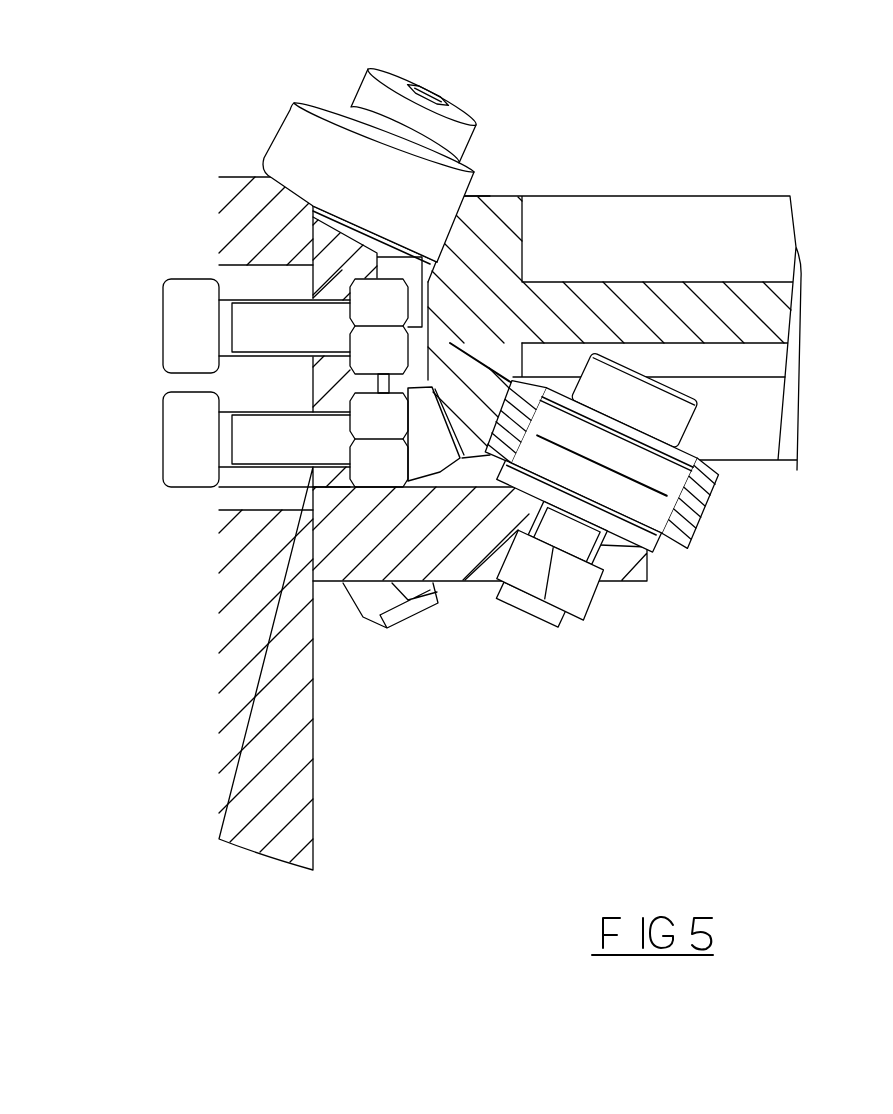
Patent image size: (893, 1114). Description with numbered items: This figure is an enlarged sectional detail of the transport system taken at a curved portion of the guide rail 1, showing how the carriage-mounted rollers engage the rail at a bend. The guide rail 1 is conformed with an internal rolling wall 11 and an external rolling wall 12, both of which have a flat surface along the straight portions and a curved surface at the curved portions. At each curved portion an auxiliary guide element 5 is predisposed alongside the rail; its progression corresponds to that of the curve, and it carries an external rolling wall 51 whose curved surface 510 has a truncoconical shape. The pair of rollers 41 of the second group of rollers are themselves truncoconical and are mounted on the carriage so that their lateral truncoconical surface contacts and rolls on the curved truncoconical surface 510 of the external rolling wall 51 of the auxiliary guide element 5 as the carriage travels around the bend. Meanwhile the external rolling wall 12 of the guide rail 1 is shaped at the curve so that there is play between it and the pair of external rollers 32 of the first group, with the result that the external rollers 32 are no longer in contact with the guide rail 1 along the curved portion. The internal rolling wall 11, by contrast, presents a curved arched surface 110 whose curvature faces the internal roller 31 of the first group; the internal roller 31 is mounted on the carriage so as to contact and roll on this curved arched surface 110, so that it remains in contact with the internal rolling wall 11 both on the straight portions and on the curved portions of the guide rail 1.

The guide rail 1 is at (467, 442).
The auxiliary guide element 5 is at (548, 188).
The internal rolling wall 11 is at (483, 380).
The external rolling wall 12 is at (408, 385).
The internal roller 31 is at (690, 524).
The external rollers 32 is at (418, 460).
The rollers 41 is at (306, 117).
The external rolling wall 51 is at (456, 238).
The curved arched surface 110 is at (517, 382).
The curved surface 510 is at (460, 203).